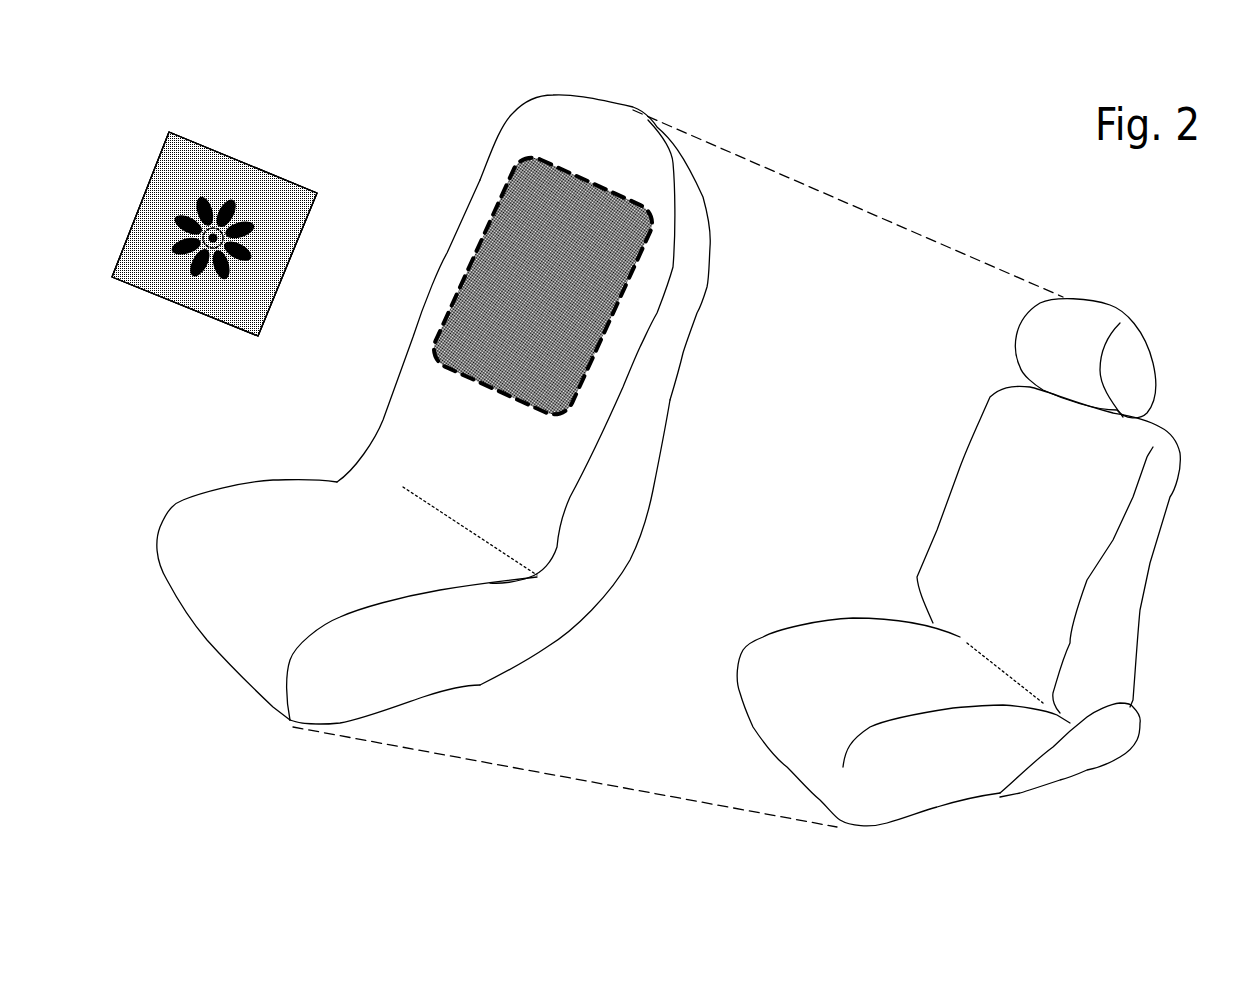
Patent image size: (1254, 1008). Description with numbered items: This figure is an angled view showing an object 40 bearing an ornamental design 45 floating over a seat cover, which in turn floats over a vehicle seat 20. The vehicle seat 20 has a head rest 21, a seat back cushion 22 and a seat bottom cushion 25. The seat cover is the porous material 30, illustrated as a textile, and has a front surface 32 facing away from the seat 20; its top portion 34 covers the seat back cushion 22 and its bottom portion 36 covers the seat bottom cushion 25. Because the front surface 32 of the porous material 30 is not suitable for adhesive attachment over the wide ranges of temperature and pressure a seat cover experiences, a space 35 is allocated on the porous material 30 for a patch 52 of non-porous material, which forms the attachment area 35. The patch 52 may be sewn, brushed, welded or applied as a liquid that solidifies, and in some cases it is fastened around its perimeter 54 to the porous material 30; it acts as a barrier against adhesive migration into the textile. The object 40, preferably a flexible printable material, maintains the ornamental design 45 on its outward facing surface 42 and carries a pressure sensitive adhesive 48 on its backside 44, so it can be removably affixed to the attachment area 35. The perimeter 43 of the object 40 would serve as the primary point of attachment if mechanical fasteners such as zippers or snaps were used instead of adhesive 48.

The vehicle seat 20 is at (1155, 272).
The head rest 21 is at (1133, 375).
The seat back cushion 22 is at (1123, 573).
The seat bottom cushion 25 is at (933, 770).
The porous material 30 is at (452, 143).
The front surface 32 is at (453, 464).
The top portion 34 is at (584, 156).
The attachment area 35 is at (530, 299).
The bottom portion 36 is at (317, 564).
The object 40 is at (252, 113).
The outward facing surface 42 is at (257, 275).
The perimeter 43 is at (140, 177).
The backside 44 is at (152, 267).
The ornamental design 45 is at (220, 197).
The adhesive 48 is at (278, 208).
The patch 52 is at (600, 287).
The perimeter 54 is at (607, 350).